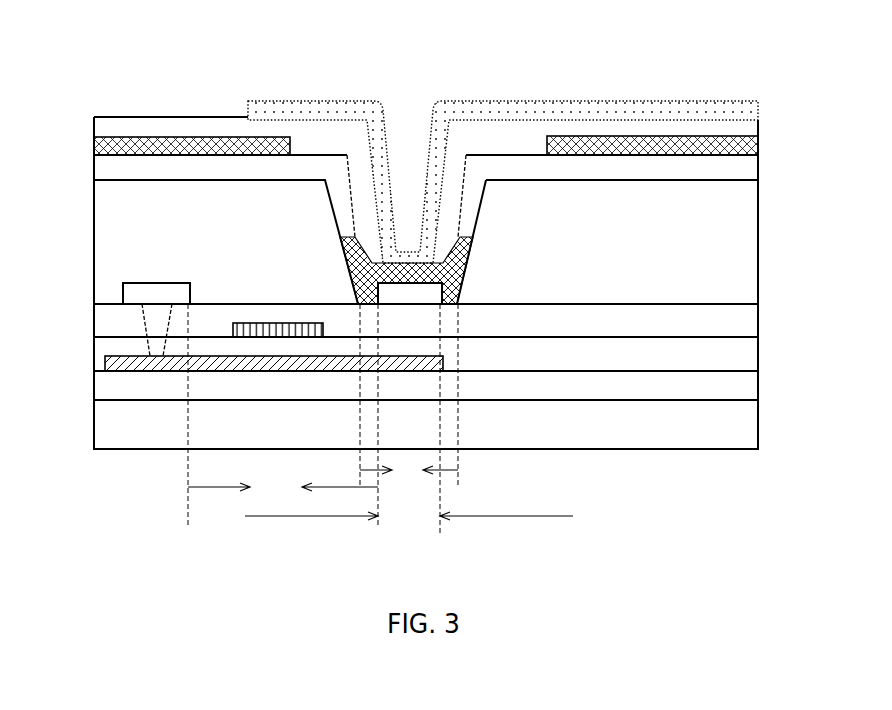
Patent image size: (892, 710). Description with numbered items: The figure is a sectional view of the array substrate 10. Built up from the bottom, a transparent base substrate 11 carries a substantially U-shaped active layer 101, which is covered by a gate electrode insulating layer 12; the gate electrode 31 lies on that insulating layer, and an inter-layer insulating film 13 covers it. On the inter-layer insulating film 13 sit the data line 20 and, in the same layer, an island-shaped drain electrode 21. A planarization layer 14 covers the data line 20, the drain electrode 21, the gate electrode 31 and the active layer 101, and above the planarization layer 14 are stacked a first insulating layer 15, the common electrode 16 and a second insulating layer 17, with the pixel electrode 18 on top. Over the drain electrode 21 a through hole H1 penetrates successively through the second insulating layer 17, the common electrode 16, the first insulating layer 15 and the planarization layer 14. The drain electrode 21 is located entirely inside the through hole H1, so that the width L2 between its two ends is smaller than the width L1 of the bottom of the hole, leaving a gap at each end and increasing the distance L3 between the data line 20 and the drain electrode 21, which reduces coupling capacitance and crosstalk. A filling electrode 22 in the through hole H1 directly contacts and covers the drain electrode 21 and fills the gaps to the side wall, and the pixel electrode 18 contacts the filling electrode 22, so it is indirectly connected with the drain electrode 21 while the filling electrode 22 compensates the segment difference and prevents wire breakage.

The array substrate 10 is at (682, 496).
The base substrate 11 is at (693, 435).
The gate electrode insulating layer 12 is at (705, 358).
The inter-layer insulating film 13 is at (710, 323).
The planarization layer 14 is at (680, 214).
The first insulating layer 15 is at (672, 170).
The common electrode 16 is at (635, 147).
The second insulating layer 17 is at (572, 132).
The pixel electrode 18 is at (311, 110).
The data line 20 is at (157, 292).
The drain electrode 21 is at (418, 308).
The filling electrode 22 is at (372, 298).
The gate electrode 31 is at (273, 323).
The active layer 101 is at (102, 358).
The through hole H1 is at (443, 227).
The width of the bottom of the through hole L1 is at (409, 470).
The width between the two ends of the drain electrode L2 is at (409, 519).
The distance between the data line and the drain electrode L3 is at (283, 487).